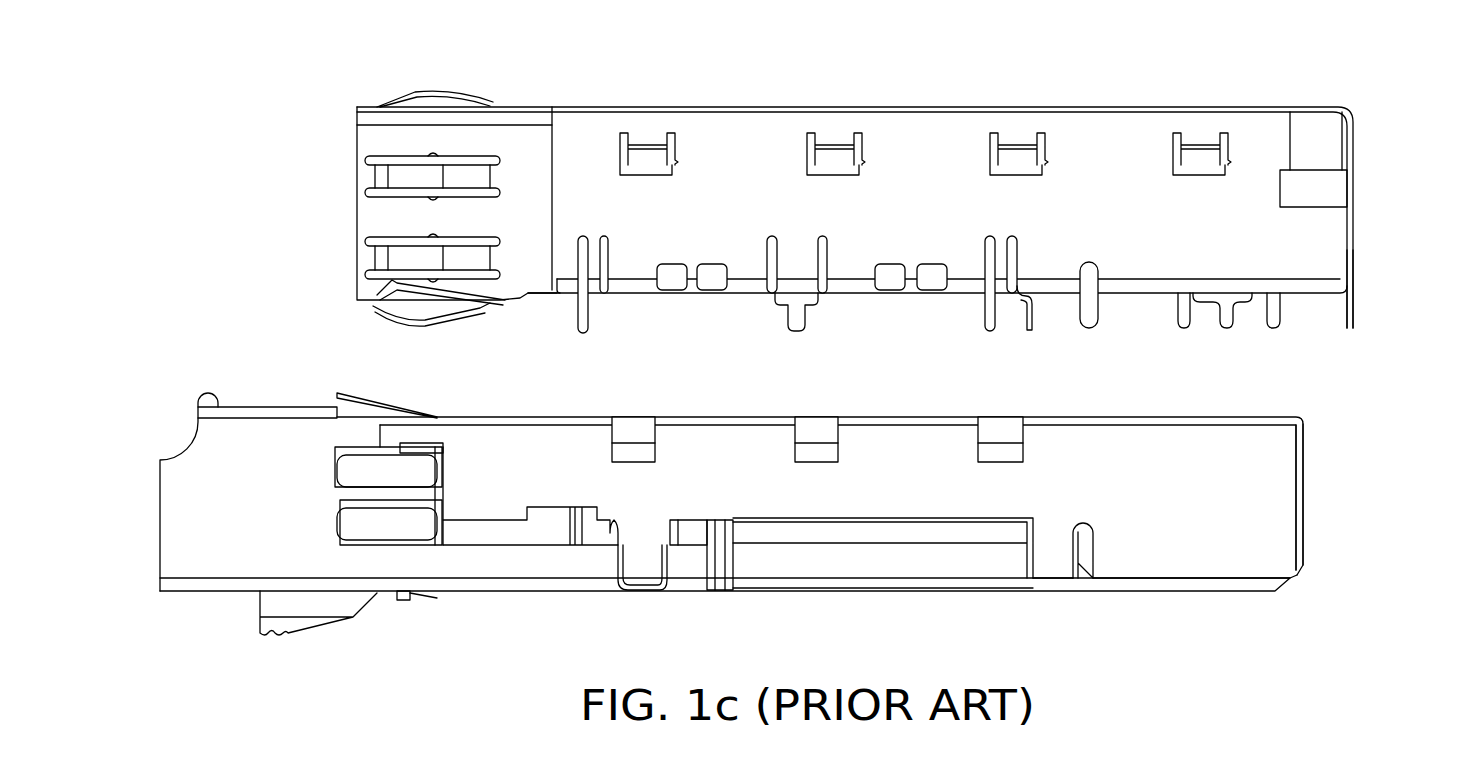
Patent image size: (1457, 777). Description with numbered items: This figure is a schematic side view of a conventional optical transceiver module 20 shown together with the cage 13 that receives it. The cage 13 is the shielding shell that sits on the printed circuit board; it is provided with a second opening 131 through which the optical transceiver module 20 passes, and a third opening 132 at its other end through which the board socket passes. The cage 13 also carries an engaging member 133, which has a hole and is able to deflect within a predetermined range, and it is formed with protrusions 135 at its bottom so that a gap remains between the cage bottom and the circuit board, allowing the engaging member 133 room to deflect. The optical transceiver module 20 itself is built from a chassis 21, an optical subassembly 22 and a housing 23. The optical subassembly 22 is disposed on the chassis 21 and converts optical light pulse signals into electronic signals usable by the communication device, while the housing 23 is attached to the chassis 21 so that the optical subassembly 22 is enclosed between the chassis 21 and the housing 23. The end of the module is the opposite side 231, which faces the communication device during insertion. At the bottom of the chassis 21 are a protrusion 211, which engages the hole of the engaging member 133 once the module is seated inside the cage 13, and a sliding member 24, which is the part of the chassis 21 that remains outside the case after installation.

The cage 13 is at (836, 209).
The second opening 131 is at (357, 147).
The third opening 132 is at (1303, 278).
The engaging member 133 is at (425, 290).
The protrusions 135 is at (798, 318).
The optical transceiver module 20 is at (792, 522).
The chassis 21 is at (193, 571).
The protrusion 211 is at (409, 615).
The optical subassembly 22 is at (362, 468).
The housing 23 is at (1244, 556).
The opposite side 231 is at (1305, 497).
The sliding member 24 is at (293, 645).